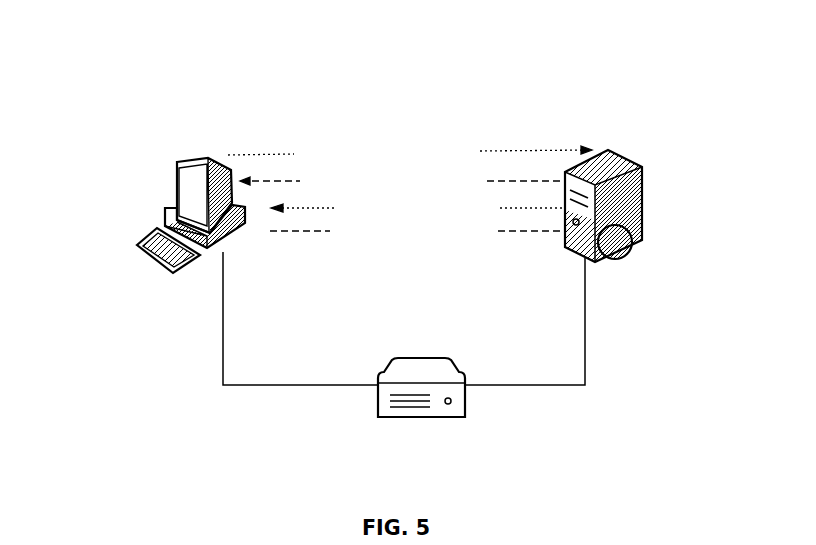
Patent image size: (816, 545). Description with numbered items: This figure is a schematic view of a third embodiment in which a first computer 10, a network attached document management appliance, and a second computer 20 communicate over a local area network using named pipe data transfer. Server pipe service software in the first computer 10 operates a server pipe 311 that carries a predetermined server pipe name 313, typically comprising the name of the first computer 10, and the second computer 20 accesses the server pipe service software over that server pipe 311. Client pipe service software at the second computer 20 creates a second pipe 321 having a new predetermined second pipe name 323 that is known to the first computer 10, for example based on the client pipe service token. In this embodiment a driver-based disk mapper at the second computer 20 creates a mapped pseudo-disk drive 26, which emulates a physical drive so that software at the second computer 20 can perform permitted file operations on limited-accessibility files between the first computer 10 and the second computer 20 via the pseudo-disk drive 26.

The second computer 20 is at (176, 196).
The first computer 10 is at (618, 192).
The mapped pseudo-disk drive 26 is at (415, 418).
The server pipe name 313 is at (402, 121).
The server pipe 311 is at (490, 142).
The second pipe 321 is at (317, 207).
The second pipe name 323 is at (437, 203).